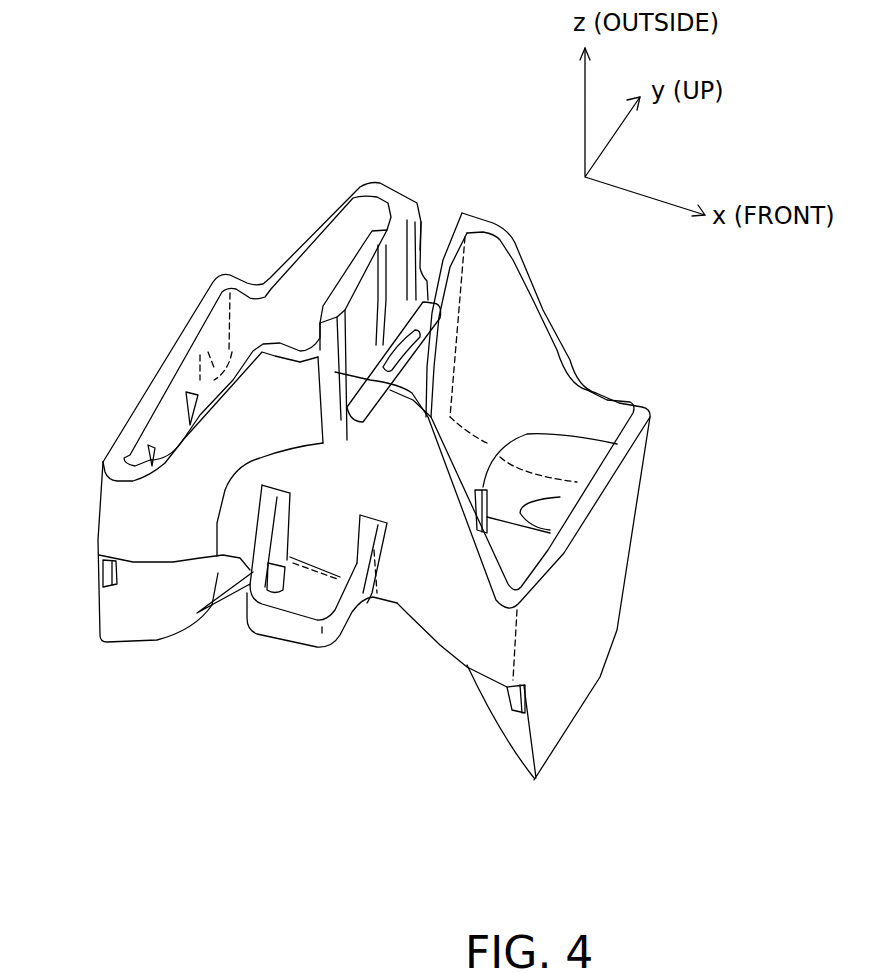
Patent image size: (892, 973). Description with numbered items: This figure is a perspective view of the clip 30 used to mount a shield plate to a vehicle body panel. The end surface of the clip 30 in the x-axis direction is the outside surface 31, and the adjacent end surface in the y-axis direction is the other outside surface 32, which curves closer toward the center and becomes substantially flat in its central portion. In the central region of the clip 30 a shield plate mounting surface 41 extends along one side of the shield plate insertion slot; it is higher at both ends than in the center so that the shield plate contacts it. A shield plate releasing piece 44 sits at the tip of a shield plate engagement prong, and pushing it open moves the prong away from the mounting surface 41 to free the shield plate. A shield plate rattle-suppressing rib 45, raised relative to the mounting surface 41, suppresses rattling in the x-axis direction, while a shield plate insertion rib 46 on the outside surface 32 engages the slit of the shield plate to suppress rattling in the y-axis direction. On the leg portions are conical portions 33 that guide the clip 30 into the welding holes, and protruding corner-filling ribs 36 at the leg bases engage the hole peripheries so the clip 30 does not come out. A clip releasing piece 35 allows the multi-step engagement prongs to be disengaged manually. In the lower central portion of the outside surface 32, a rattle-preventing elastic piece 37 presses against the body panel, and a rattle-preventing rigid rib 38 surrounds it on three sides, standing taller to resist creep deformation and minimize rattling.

The clip 30 is at (278, 244).
The outside surface 31 is at (590, 600).
The outside surface 32 is at (413, 565).
The conical portions 33 is at (147, 612).
The clip releasing piece 35 is at (610, 443).
The corner-filling ribs 36 is at (103, 573).
The rattle-preventing elastic piece 37 is at (307, 597).
The rattle-preventing rigid rib 38 is at (280, 627).
The shield plate mounting surface 41 is at (399, 250).
The shield plate releasing piece 44 is at (433, 318).
The shield plate rattle-suppressing rib 45 is at (422, 230).
The shield plate insertion rib 46 is at (218, 557).